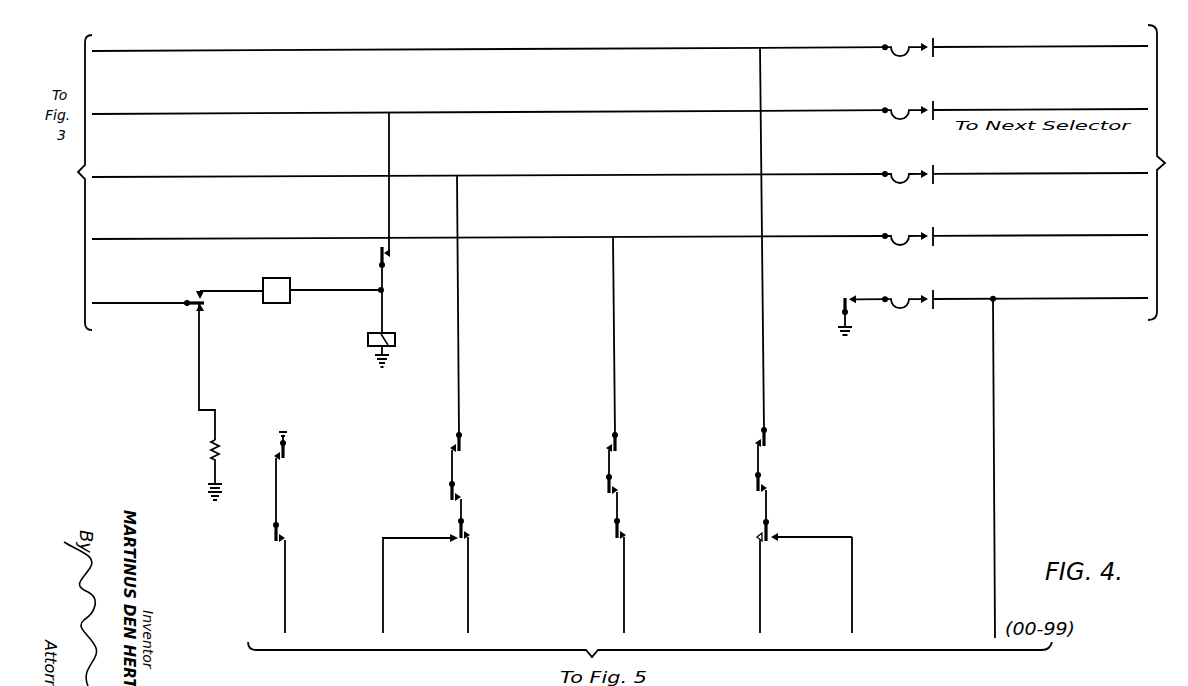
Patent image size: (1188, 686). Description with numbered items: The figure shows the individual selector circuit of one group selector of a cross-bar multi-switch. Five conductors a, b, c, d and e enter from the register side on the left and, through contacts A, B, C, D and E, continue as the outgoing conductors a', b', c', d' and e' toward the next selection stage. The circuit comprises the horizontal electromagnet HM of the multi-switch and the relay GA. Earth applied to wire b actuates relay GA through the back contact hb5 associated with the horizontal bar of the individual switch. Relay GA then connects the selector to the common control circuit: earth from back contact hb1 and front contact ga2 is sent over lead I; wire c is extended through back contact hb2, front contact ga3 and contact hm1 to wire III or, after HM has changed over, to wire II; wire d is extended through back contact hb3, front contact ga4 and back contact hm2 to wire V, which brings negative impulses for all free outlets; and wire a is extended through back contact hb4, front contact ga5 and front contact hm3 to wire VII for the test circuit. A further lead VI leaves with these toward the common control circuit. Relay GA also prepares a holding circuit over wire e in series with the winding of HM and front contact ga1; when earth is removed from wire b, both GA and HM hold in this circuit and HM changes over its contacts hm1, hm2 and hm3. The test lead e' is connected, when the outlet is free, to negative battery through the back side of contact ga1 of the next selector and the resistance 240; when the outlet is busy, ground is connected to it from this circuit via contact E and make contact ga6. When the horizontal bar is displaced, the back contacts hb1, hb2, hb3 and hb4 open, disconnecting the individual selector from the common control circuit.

The wire a is at (488, 59).
The wire b is at (488, 124).
The wire c is at (488, 188).
The wire d is at (488, 249).
The wire e is at (139, 313).
The outgoing conductor a' to next selector a' is at (1040, 38).
The outgoing conductor b' to next selector b' is at (1040, 98).
The outgoing conductor c' to next selector c' is at (1040, 223).
The outgoing conductor d' to next selector d' is at (1040, 163).
The test lead e' is at (1040, 459).
The selector wiper A is at (907, 59).
The selector wiper B is at (907, 120).
The selector wiper C is at (907, 186).
The selector wiper D is at (907, 247).
The contact E is at (907, 311).
The contact ga1 is at (212, 356).
The front contact ga2 is at (301, 577).
The front contact ga3 is at (478, 501).
The front contact ga4 is at (632, 497).
The front contact ga5 is at (782, 497).
The make contact ga6 is at (860, 302).
The back contact hb1 is at (301, 478).
The back contact hb2 is at (478, 330).
The back contact hb3 is at (632, 357).
The back contact hb4 is at (782, 261).
The back contact hb5 is at (403, 223).
The contact hm1 is at (446, 575).
The back contact hm2 is at (642, 575).
The contact hm3 is at (804, 574).
The horizontal electromagnet HM is at (322, 279).
The relay GA is at (397, 349).
The resistance 240 is at (234, 468).
The lead I is at (298, 626).
The wire II is at (420, 585).
The wire III is at (491, 626).
The wire V is at (644, 626).
The lead VI to Fig. 5 VI is at (782, 626).
The wire VII is at (867, 587).